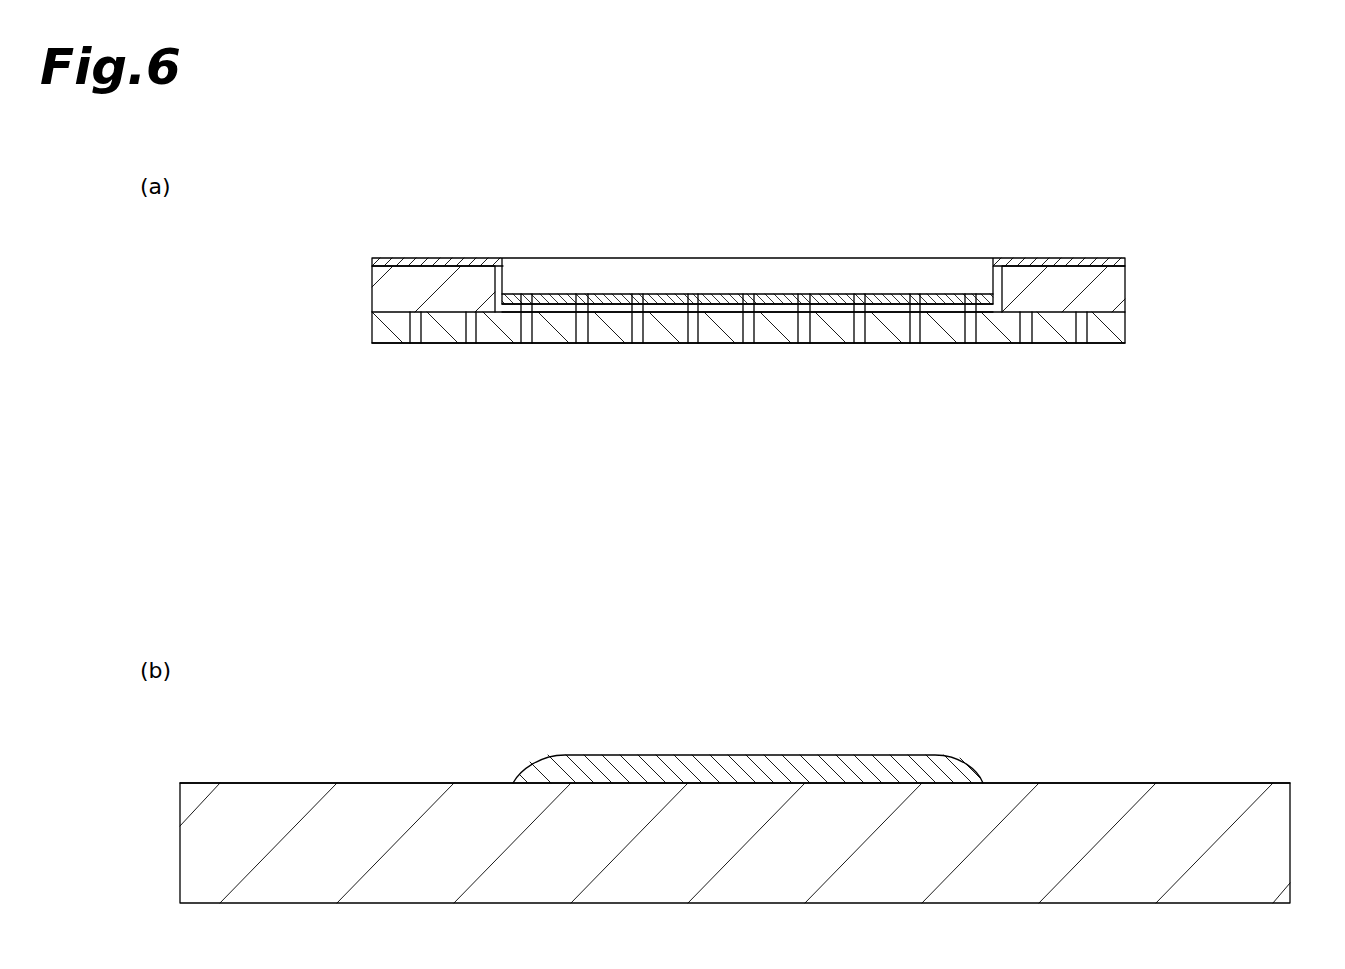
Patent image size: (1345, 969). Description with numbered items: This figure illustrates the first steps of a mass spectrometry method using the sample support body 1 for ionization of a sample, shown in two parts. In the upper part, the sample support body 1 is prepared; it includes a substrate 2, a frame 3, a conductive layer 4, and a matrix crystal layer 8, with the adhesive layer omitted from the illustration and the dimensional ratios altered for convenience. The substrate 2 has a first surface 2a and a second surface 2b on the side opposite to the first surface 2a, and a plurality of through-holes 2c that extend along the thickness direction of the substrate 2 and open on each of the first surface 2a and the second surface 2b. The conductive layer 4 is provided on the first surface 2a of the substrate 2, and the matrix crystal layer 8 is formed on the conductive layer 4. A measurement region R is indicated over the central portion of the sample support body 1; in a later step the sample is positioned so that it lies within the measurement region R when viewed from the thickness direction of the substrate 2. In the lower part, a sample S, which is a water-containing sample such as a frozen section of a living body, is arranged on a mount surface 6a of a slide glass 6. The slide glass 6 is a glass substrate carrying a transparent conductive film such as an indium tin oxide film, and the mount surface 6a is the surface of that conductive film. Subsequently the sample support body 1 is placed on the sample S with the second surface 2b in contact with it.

The sample support body 1 is at (784, 299).
The substrate 2 is at (1115, 332).
The first surface 2a is at (1113, 310).
The second surface 2b is at (1100, 343).
The through-holes 2c is at (530, 333).
The frame 3 is at (1127, 282).
The conductive layer 4 is at (675, 307).
The matrix crystal layer 8 is at (888, 298).
The measurement region R is at (826, 293).
The sample S is at (900, 756).
The slide glass 6 is at (1277, 855).
The mount surface 6a is at (1203, 783).